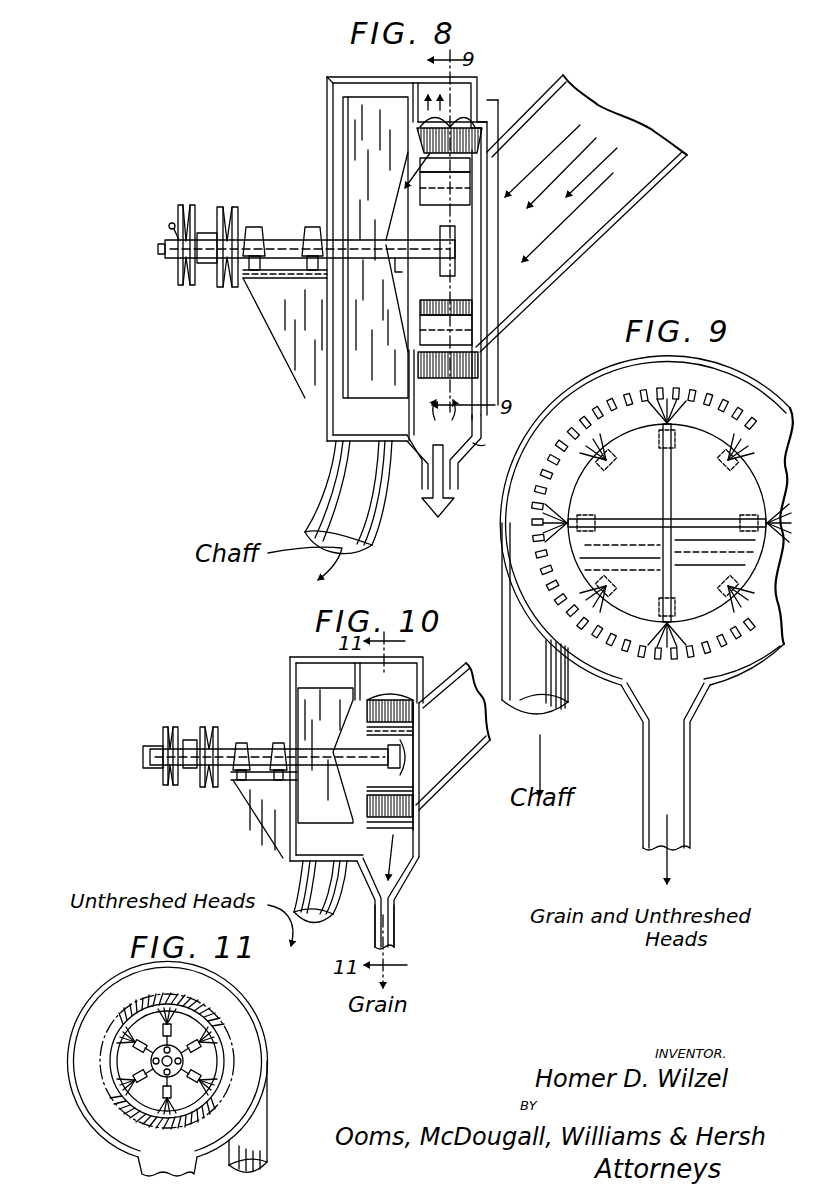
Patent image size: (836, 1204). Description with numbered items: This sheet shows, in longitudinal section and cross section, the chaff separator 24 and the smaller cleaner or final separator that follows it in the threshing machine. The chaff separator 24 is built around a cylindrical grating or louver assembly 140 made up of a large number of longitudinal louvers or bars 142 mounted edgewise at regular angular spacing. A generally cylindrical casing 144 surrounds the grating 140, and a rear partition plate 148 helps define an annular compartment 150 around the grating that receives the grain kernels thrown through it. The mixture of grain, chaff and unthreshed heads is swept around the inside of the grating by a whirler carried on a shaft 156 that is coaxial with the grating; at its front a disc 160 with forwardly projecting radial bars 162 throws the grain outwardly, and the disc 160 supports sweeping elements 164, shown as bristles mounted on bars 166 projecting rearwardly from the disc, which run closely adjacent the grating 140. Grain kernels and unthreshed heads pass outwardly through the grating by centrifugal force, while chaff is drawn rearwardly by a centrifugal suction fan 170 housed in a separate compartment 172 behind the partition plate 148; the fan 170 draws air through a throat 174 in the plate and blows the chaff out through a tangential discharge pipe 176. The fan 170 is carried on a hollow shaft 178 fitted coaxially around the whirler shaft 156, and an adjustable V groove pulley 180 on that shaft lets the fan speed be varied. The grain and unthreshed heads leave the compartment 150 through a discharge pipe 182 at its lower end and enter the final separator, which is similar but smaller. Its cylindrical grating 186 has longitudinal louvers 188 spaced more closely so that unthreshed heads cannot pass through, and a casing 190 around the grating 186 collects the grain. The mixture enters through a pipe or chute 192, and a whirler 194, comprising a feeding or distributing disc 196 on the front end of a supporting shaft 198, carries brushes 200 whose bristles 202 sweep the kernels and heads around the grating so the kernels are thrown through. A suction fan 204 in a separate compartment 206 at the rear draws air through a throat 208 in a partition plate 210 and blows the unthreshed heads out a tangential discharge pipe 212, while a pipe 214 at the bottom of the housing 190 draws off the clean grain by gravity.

In FIG. 8, the chaff separator 24 is at (298, 72).
In FIG. 8, the casing 144 is at (390, 78).
In FIG. 8, the partition plate 148 is at (398, 427).
In FIG. 8, the annular compartment 150 is at (460, 92).
In FIG. 8, the shaft 156 is at (447, 244).
In FIG. 8, the front plate or disc 160 is at (478, 210).
In FIG. 8, the sweeping elements 164 is at (412, 140).
In FIG. 8, the bars 166 is at (412, 154).
In FIG. 8, the suction fan 170 is at (352, 372).
In FIG. 8, the compartment 172 is at (348, 421).
In FIG. 8, the opening or throat 174 is at (418, 360).
In FIG. 8, the tangential discharge pipe 176 is at (337, 496).
In FIG. 8, the hollow shaft 178 is at (391, 260).
In FIG. 8, the adjustable V groove pulley 180 is at (208, 286).
In FIG. 8, the discharge pipe 182 is at (420, 478).
In FIG. 9, the grating or louver assembly 140 is at (740, 650).
In FIG. 9, the longitudinal louvers or bars 142 is at (700, 653).
In FIG. 9, the radial bars 162 is at (640, 527).
In FIG. 10, the cylindrical grating or louver assembly 186 is at (402, 824).
In FIG. 10, the casing 190 is at (392, 668).
In FIG. 10, the pipe or chute 192 is at (452, 780).
In FIG. 10, the whirler 194 is at (418, 777).
In FIG. 10, the feeding or distributing disc 196 is at (412, 736).
In FIG. 10, the supporting shaft 198 is at (387, 766).
In FIG. 10, the brushes 200 is at (378, 736).
In FIG. 10, the bristles 202 is at (375, 801).
In FIG. 10, the suction fan 204 is at (325, 696).
In FIG. 10, the compartment 206 is at (302, 670).
In FIG. 10, the throat 208 is at (375, 719).
In FIG. 10, the partition plate 210 is at (357, 668).
In FIG. 10, the tangential discharge pipe 212 is at (315, 874).
In FIG. 10, the pipe 214 is at (398, 928).
In FIG. 11, the longitudinal louvers 188 is at (120, 989).